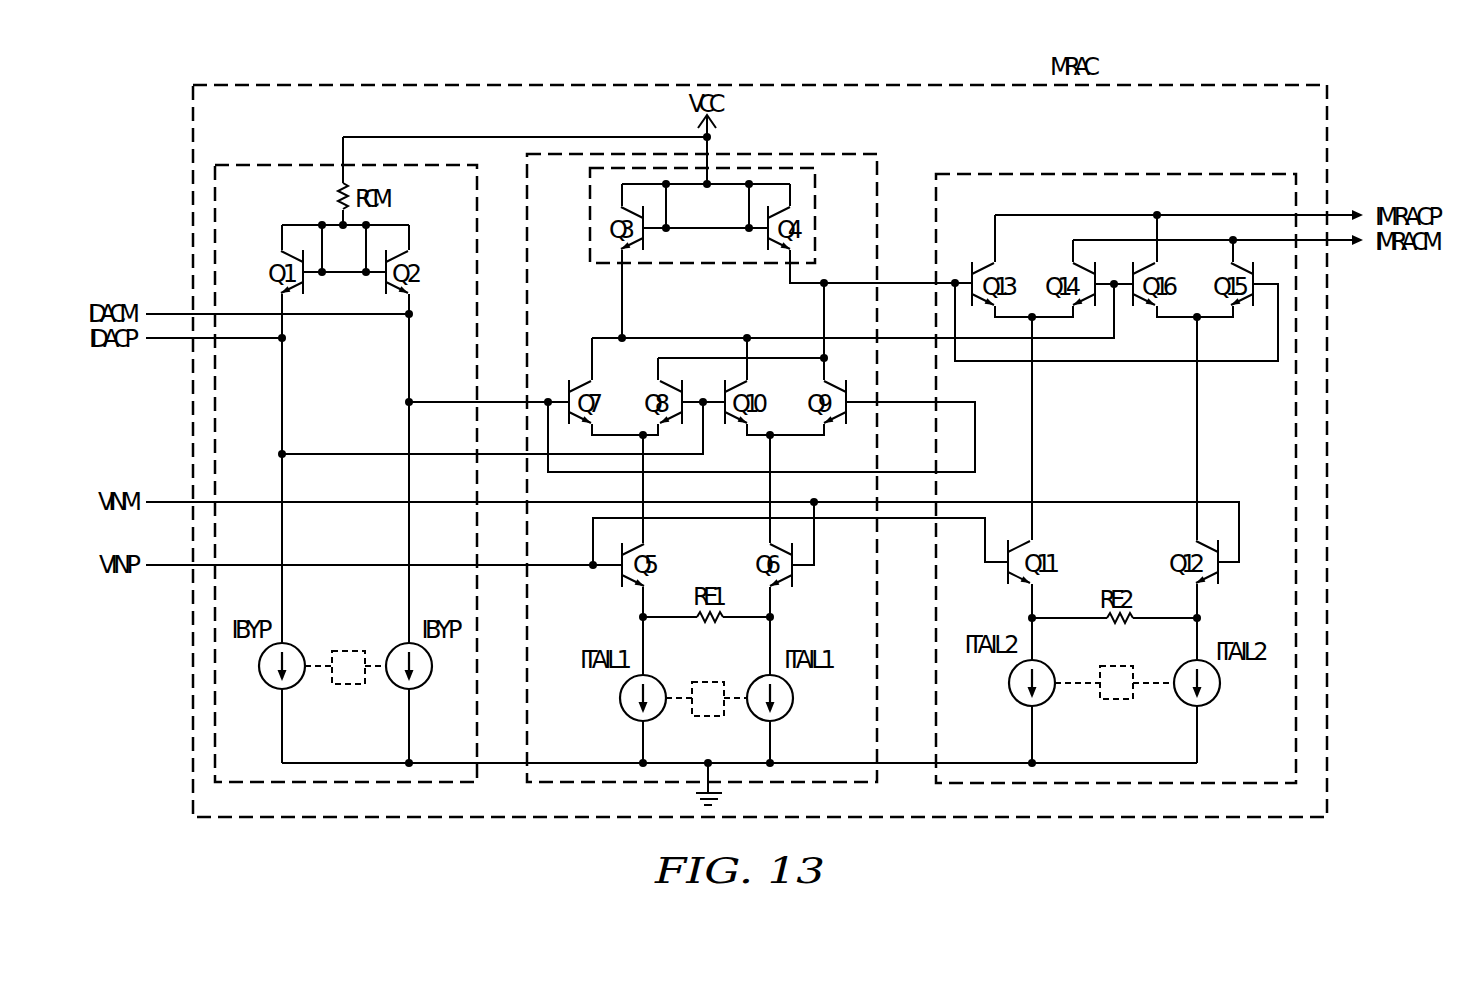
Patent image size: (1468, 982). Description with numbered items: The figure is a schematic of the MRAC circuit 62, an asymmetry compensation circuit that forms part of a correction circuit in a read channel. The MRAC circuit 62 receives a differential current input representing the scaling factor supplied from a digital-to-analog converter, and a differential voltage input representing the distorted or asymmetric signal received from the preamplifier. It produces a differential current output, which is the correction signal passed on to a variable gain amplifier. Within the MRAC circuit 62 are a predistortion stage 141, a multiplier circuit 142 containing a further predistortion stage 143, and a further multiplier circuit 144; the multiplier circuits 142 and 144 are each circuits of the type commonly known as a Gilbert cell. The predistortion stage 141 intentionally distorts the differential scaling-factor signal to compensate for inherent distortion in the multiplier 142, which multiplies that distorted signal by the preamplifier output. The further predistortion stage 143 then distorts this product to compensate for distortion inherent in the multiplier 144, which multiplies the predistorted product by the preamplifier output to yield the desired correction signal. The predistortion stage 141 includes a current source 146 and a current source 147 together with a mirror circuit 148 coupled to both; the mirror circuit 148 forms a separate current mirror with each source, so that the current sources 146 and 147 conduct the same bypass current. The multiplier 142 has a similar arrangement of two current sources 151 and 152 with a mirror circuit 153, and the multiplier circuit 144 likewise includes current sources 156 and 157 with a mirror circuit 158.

The MRAC circuit 62 is at (1257, 85).
The predistortion stage 141 is at (283, 163).
The multiplier circuit 142 is at (848, 153).
The further predistortion stage 143 is at (762, 167).
The further multiplier circuit 144 is at (1147, 174).
The current source 146 is at (292, 642).
The current source 147 is at (402, 642).
The mirror circuit 148 is at (348, 686).
The current source 151 is at (622, 712).
The current source 152 is at (793, 712).
The mirror circuit 153 is at (703, 682).
The current source 156 is at (1013, 695).
The current source 157 is at (1214, 700).
The mirror circuit 158 is at (1112, 702).